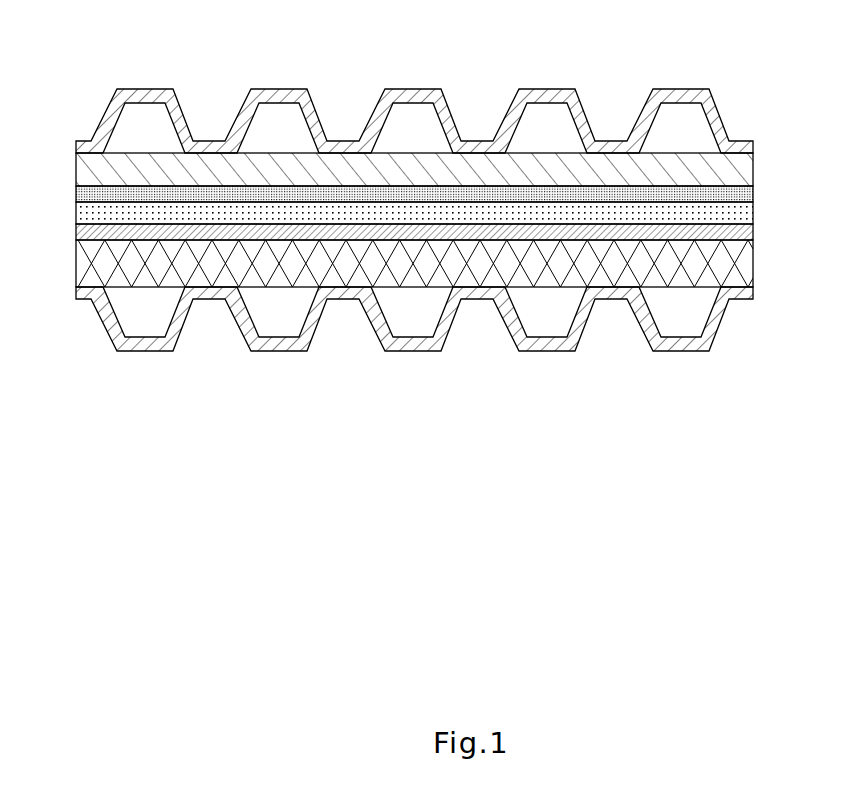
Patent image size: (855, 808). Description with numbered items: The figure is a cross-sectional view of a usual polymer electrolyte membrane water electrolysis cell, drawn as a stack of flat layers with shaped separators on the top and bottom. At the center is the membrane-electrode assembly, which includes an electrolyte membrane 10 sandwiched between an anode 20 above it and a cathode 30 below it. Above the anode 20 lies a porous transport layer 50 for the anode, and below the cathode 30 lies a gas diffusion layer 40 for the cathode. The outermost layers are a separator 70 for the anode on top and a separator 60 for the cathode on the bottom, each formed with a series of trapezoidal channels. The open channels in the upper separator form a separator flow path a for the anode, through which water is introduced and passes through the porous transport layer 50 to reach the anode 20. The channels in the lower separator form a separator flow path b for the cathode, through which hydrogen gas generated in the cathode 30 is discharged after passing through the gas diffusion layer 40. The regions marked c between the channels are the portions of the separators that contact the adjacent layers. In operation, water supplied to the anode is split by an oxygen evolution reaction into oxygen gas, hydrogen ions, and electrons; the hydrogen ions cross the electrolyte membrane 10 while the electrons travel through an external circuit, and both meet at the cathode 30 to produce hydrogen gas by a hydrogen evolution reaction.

The electrolyte membrane 10 is at (753, 208).
The anode 20 is at (753, 190).
The cathode 30 is at (753, 228).
The gas diffusion layer 40 is at (753, 258).
The porous transport layer 50 is at (753, 165).
The separator for the cathode 60 is at (722, 323).
The separator for the anode 70 is at (722, 110).
The separator flow path for the anode a is at (151, 121).
The separator flow path for the cathode b is at (151, 320).
The recess region c is at (217, 121).